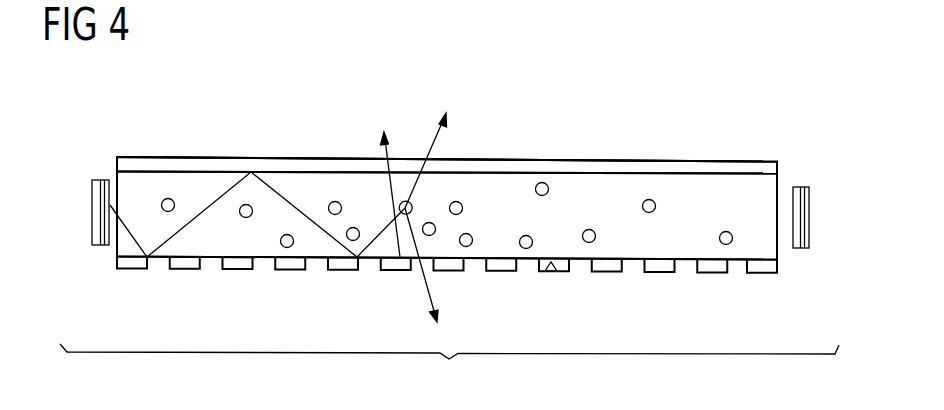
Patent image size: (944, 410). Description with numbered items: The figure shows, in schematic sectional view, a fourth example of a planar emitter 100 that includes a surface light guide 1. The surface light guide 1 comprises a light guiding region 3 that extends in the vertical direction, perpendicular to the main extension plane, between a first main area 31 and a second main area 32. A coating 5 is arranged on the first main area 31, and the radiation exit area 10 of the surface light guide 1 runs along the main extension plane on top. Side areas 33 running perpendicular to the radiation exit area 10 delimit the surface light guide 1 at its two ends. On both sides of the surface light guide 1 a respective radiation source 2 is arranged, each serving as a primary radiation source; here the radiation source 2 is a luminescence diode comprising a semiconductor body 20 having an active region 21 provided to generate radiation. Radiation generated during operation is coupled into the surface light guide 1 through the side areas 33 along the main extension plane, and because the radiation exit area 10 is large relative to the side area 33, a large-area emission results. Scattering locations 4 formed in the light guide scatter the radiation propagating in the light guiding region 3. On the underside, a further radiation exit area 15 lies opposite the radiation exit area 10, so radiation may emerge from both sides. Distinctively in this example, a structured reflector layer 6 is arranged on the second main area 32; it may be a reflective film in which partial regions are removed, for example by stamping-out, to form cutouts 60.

The surface light guide 1 is at (756, 101).
The radiation source 2 is at (92, 235).
The light guiding region 3 is at (768, 188).
The scattering locations 4 is at (412, 207).
The coating 5 is at (698, 167).
The reflector layer 6 is at (708, 270).
The radiation exit area 10 is at (606, 159).
The further radiation exit area 15 is at (535, 259).
The semiconductor body 20 is at (95, 217).
The active region 21 is at (93, 188).
The first main area 31 is at (526, 170).
The second main area 32 is at (557, 270).
The side areas 33 is at (113, 171).
The cutouts 60 is at (683, 264).
The planar emitter 100 is at (449, 371).